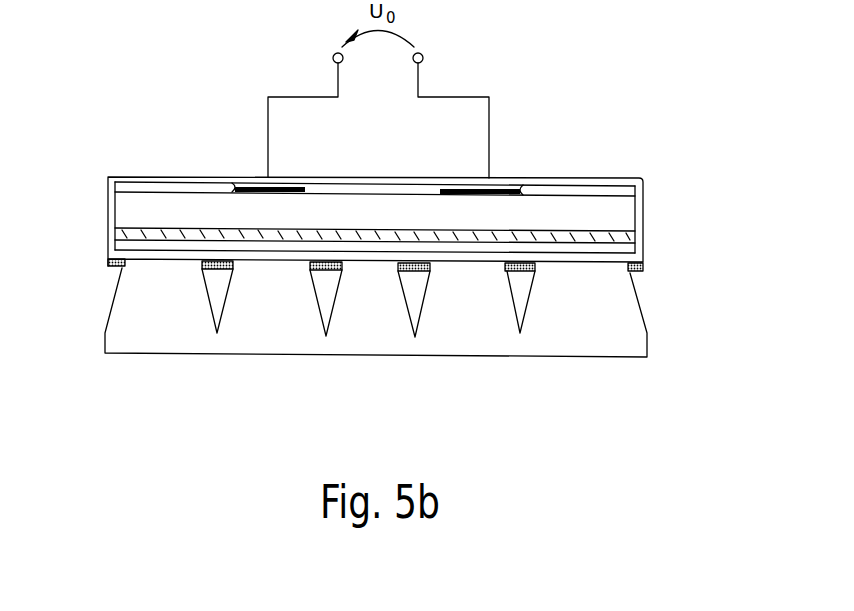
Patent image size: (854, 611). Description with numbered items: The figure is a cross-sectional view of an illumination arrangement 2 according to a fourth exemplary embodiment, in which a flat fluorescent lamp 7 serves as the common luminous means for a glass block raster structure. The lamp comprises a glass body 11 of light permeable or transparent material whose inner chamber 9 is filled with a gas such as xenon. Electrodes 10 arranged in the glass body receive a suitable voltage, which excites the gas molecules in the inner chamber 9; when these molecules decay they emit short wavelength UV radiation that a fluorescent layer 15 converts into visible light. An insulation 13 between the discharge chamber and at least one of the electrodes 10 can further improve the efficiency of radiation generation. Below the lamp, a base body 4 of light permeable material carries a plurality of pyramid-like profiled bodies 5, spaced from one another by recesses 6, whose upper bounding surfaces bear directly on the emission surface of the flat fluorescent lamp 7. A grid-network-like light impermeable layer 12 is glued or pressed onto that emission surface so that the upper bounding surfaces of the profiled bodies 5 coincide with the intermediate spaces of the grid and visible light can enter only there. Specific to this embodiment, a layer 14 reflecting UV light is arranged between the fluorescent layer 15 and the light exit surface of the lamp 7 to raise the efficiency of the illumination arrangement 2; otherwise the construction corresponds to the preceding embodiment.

The illumination arrangement 2 is at (653, 373).
The base body 4 is at (282, 342).
The profiled bodies 5 is at (257, 297).
The recesses 6 is at (314, 287).
The flat fluorescent lamp 7 is at (652, 152).
The inner chamber 9 is at (125, 207).
The electrodes 10 is at (243, 174).
The glass body 11 is at (108, 183).
The light impermeable layer 12 is at (400, 269).
The insulation 13 is at (592, 176).
The UV reflecting layer 14 is at (125, 250).
The fluorescent layer 15 is at (627, 237).